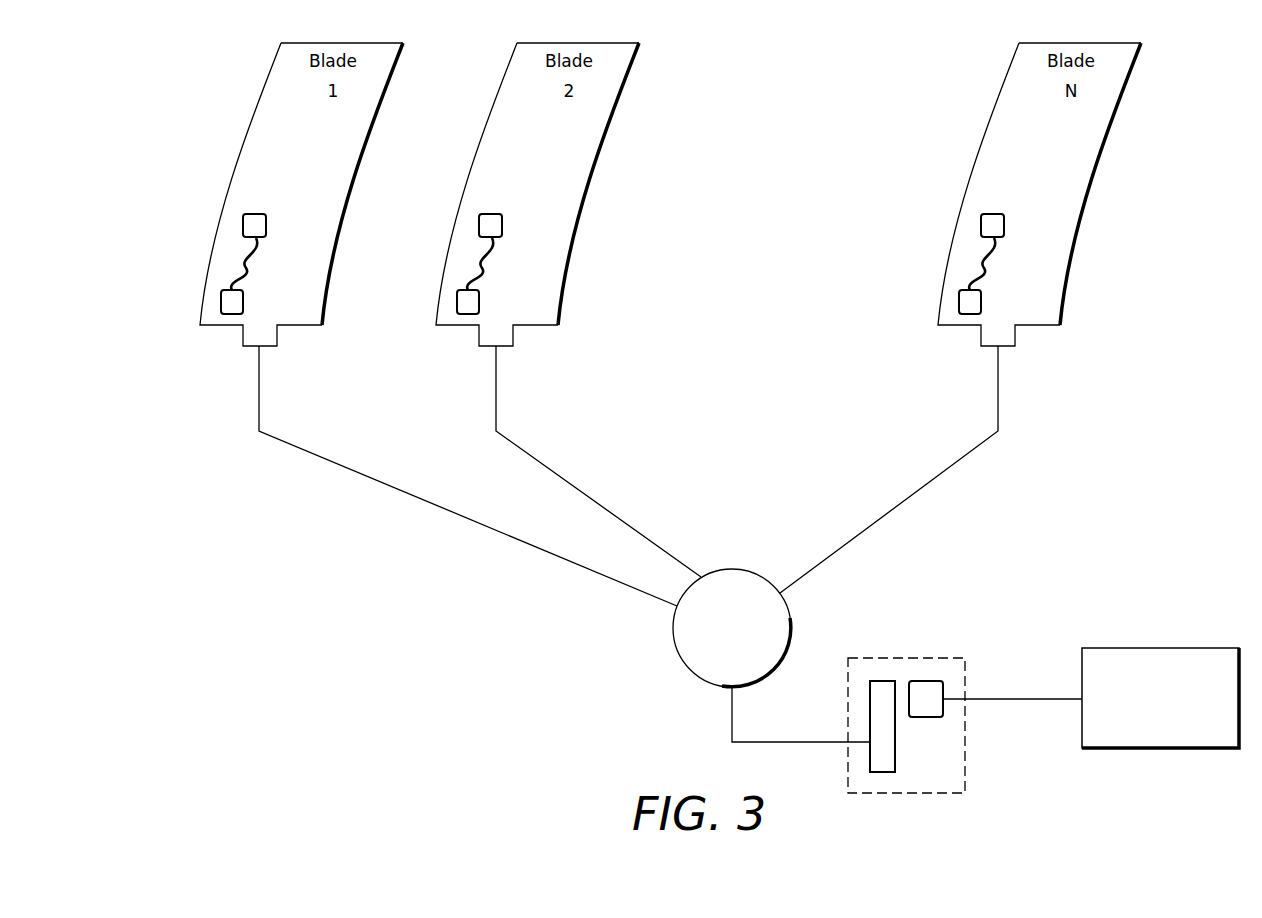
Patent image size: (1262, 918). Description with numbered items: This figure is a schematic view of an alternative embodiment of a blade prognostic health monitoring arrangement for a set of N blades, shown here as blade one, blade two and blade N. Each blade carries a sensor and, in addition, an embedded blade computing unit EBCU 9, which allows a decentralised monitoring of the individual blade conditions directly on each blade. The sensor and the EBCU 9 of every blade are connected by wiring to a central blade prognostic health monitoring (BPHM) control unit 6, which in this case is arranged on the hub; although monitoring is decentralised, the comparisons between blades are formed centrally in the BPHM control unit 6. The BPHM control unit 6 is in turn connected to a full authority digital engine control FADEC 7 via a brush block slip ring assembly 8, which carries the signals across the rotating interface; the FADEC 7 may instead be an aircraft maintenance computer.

The embedded blade computing unit 9 is at (221, 303).
The blade prognostic health monitoring control unit 6 is at (678, 655).
The brush block slip ring assembly 8 is at (937, 658).
The full authority digital engine control 7 is at (1218, 648).